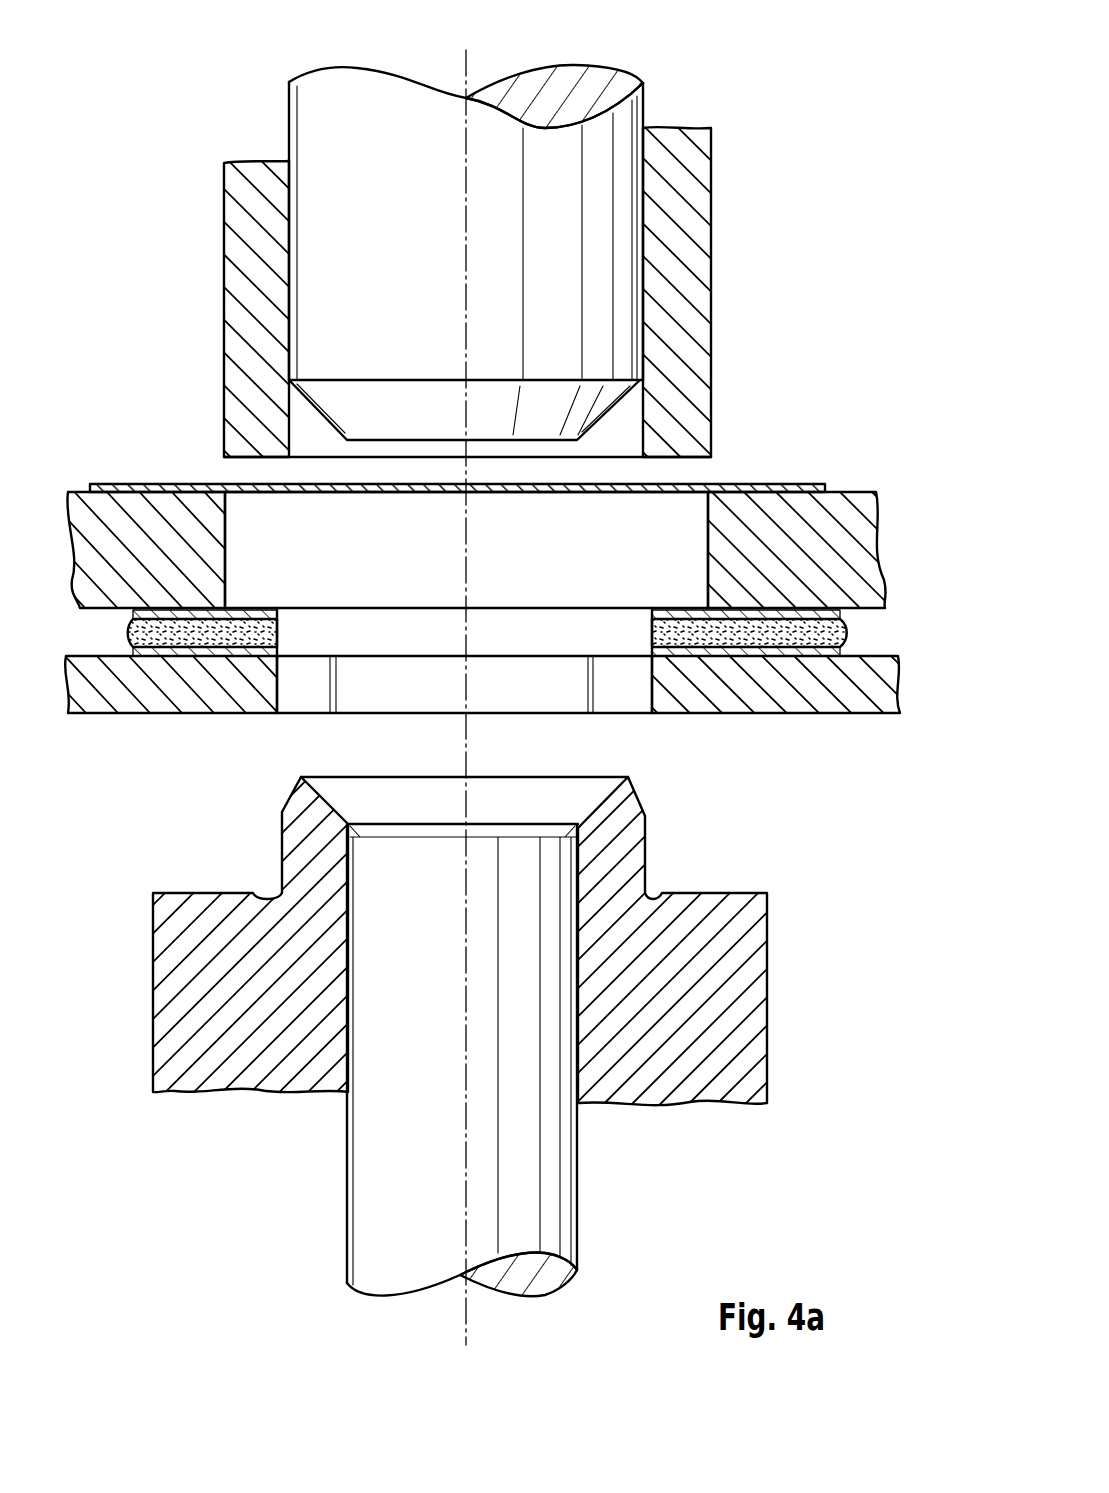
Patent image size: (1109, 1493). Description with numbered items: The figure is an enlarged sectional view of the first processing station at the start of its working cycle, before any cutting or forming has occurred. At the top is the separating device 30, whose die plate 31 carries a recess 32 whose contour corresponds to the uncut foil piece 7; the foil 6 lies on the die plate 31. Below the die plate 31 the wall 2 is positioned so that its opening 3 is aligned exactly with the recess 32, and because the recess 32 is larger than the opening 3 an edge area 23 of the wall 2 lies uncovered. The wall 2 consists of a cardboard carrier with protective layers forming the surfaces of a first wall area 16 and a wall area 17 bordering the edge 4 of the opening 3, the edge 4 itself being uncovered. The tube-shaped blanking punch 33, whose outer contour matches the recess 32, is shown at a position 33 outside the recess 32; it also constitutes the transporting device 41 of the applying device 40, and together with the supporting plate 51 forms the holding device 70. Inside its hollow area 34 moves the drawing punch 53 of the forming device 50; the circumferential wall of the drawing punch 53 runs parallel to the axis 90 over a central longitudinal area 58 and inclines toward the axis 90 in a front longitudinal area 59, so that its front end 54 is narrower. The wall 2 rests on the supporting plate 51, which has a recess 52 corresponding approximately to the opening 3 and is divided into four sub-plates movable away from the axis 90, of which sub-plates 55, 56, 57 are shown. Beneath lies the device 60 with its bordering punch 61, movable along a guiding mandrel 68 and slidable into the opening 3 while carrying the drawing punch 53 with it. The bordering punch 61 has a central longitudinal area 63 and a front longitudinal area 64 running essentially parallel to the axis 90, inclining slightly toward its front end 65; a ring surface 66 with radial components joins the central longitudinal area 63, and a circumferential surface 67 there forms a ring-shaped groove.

The wall 2 is at (845, 633).
The opening 3 is at (405, 622).
The edge 4 is at (640, 636).
The foil 6 is at (815, 488).
The foil piece 7 is at (115, 485).
The first wall area 16 is at (688, 612).
The wall area 17 is at (703, 665).
The edge area 23 is at (256, 610).
The separating device 30 is at (733, 392).
The die plate 31 is at (876, 490).
The recess 32 is at (708, 487).
The blanking punch 33 is at (703, 185).
The hollow area 34 is at (633, 413).
The applying device 40 is at (732, 433).
The transporting device 41 is at (735, 407).
The forming device 50 is at (664, 88).
The supporting plate 51 is at (222, 732).
The recess 52 is at (580, 700).
The drawing punch 53 is at (310, 98).
The front end 54 is at (392, 442).
The sub-plate 55 is at (760, 703).
The sub-plate 56 is at (150, 703).
The sub-plate 57 is at (481, 700).
The central longitudinal area 58 is at (283, 290).
The front longitudinal area 59 is at (321, 395).
The forming device 60 is at (682, 850).
The bordering punch 61 is at (757, 928).
The central longitudinal area 63 is at (282, 838).
The front longitudinal area 64 is at (636, 792).
The front end 65 is at (412, 776).
The ring surface 66 is at (733, 893).
The circumferential surface 67 is at (265, 890).
The guiding mandrel 68 is at (558, 1168).
The holding device 70 is at (253, 633).
The axis 90 is at (466, 1342).